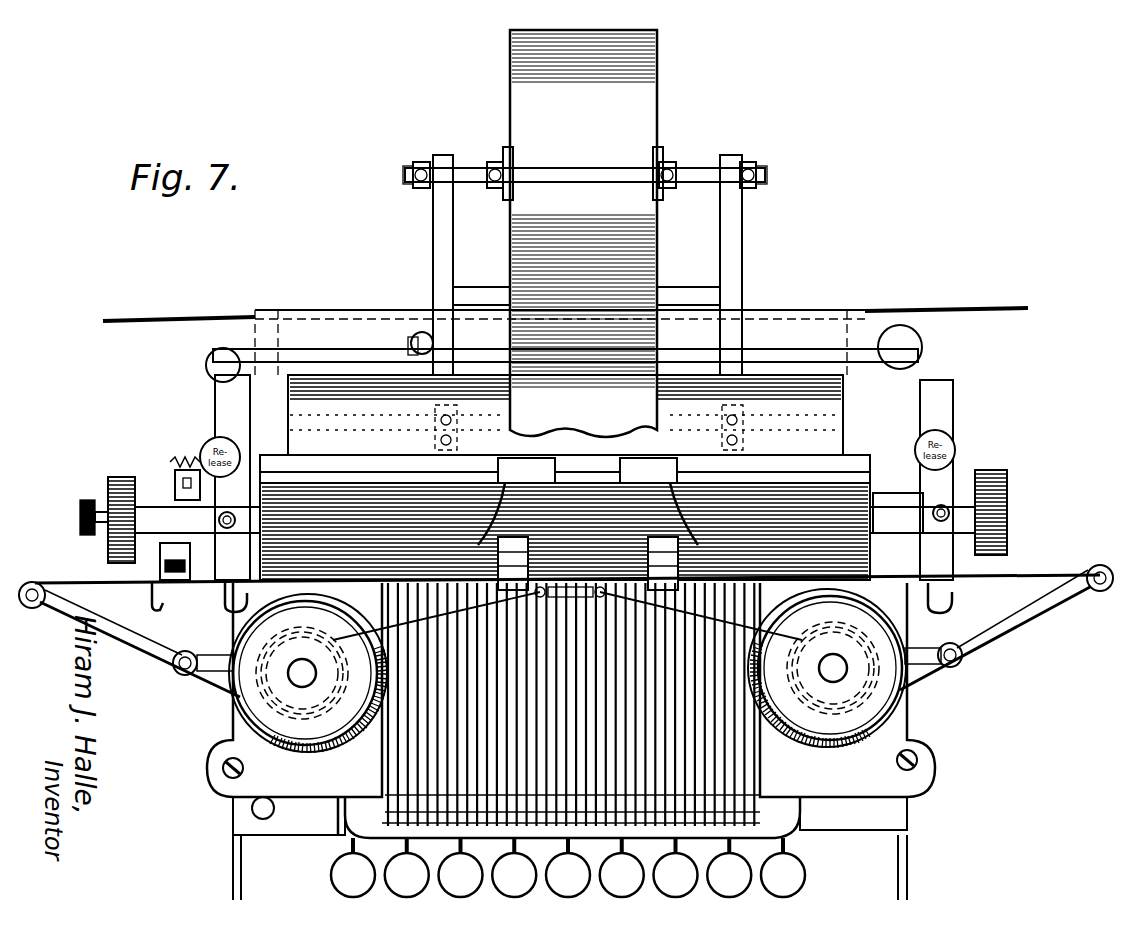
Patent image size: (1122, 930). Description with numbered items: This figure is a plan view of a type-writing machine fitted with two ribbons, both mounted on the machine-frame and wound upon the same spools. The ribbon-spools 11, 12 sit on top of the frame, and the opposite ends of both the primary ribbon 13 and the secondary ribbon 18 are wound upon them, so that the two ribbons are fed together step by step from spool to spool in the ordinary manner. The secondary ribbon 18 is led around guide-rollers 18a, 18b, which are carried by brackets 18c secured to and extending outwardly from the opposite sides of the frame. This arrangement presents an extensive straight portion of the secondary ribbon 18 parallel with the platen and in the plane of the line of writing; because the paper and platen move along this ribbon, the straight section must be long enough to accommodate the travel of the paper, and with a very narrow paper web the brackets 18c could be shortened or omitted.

The ribbon-spool 11 is at (318, 712).
The ribbon-spool 12 is at (832, 707).
The primary ribbon 13 is at (378, 618).
The secondary ribbon 18 is at (280, 586).
The guide-roller 18a is at (188, 654).
The guide-roller 18b is at (45, 578).
The bracket 18c is at (100, 627).